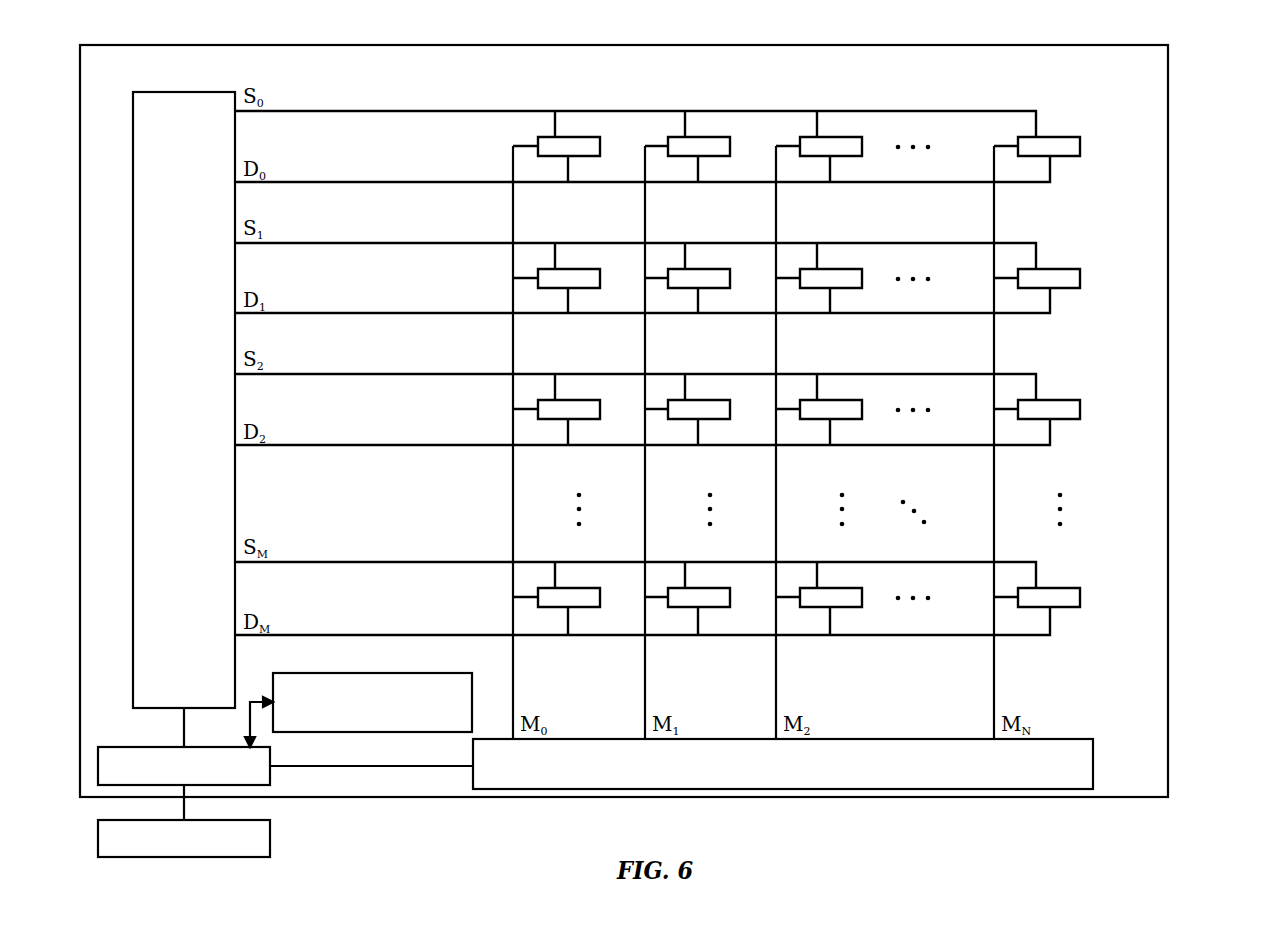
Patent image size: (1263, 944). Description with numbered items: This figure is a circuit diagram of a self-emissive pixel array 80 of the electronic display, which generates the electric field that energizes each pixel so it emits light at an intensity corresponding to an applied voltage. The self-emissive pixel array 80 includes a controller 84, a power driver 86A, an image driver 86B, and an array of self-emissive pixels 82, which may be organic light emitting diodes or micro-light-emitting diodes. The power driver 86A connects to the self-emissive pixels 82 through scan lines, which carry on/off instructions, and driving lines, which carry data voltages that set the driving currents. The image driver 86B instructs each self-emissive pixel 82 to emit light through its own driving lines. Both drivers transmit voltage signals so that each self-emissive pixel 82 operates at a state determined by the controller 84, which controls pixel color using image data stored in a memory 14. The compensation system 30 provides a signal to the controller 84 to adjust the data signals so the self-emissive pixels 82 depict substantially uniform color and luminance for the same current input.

The self-emissive pixel array 80 is at (1168, 422).
The power driver 86A is at (185, 92).
The self-emissive pixels 82 is at (818, 358).
The controller 84 is at (113, 747).
The compensation system 30 is at (373, 673).
The image driver 86B is at (773, 789).
The memory 14 is at (270, 839).